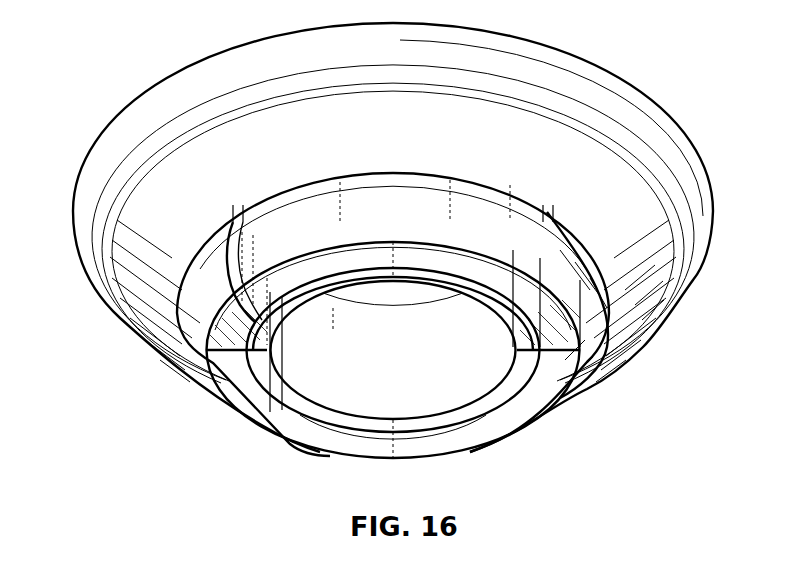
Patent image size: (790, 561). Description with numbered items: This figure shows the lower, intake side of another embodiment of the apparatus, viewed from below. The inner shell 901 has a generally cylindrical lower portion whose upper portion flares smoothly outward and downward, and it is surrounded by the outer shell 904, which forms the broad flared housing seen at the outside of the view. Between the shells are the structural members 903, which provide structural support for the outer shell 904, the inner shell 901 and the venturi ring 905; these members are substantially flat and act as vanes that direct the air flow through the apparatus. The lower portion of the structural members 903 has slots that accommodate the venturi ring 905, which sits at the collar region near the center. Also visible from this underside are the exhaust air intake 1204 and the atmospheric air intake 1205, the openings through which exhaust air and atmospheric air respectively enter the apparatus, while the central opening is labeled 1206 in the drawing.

The inner shell 901 is at (453, 413).
The structural members 903 is at (310, 448).
The outer shell 904 is at (547, 417).
The venturi ring 905 is at (317, 432).
The exhaust air intake 1204 is at (353, 423).
The atmospheric air intake 1205 is at (443, 438).
The central opening 1206 is at (412, 359).